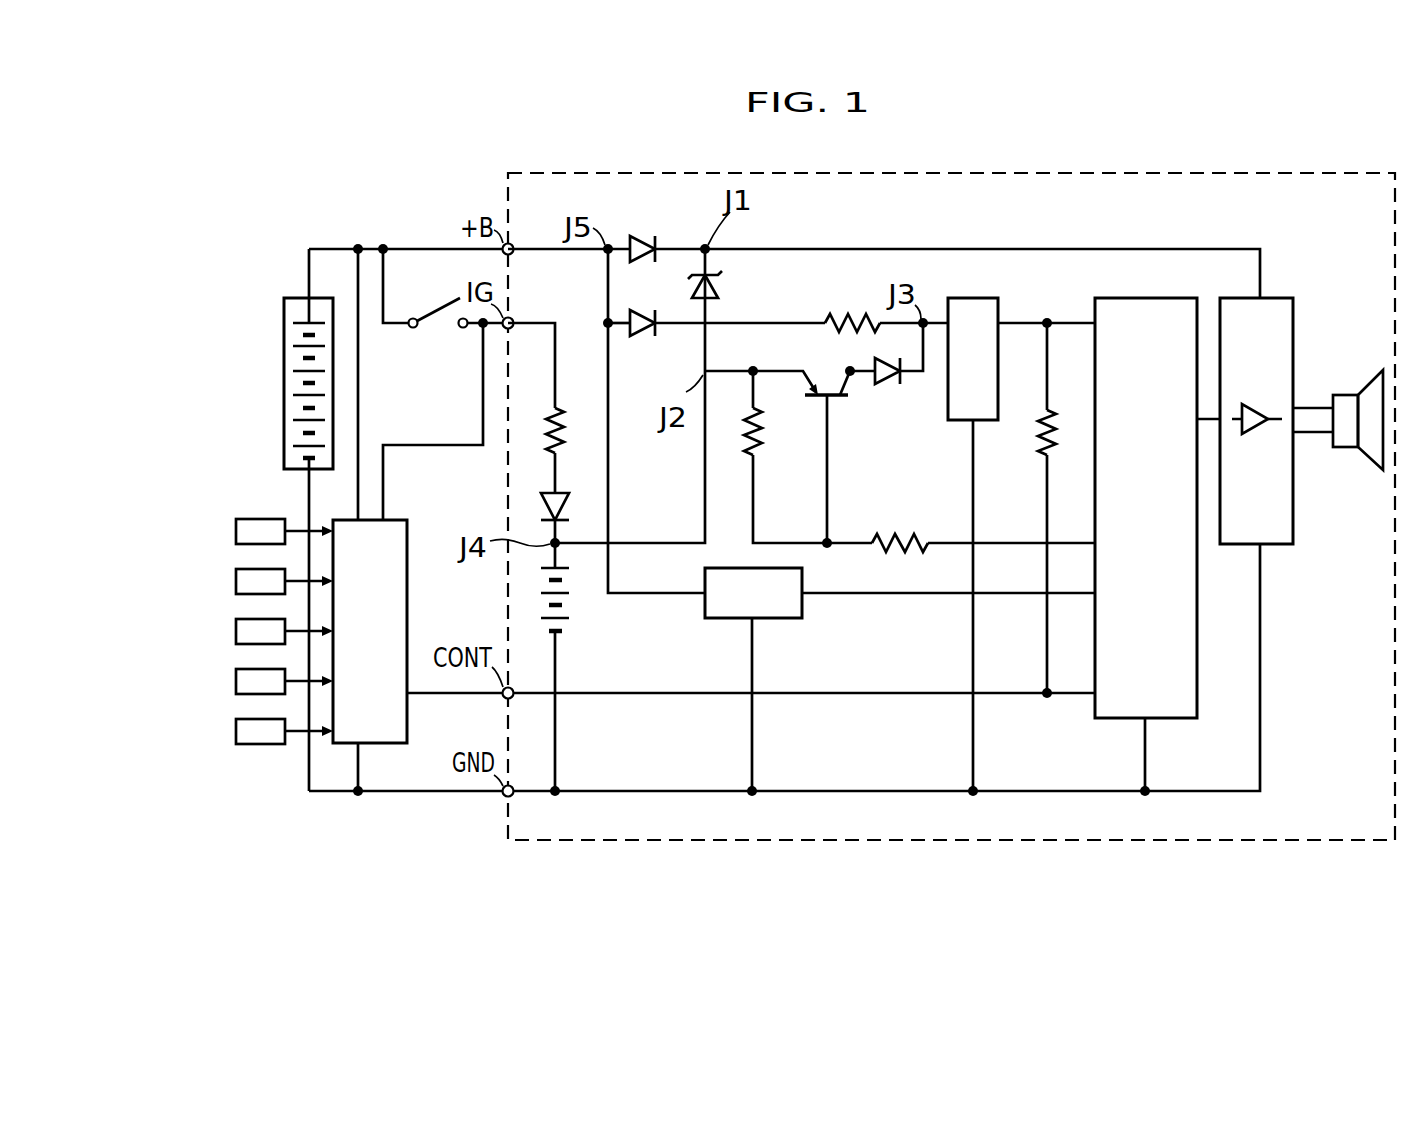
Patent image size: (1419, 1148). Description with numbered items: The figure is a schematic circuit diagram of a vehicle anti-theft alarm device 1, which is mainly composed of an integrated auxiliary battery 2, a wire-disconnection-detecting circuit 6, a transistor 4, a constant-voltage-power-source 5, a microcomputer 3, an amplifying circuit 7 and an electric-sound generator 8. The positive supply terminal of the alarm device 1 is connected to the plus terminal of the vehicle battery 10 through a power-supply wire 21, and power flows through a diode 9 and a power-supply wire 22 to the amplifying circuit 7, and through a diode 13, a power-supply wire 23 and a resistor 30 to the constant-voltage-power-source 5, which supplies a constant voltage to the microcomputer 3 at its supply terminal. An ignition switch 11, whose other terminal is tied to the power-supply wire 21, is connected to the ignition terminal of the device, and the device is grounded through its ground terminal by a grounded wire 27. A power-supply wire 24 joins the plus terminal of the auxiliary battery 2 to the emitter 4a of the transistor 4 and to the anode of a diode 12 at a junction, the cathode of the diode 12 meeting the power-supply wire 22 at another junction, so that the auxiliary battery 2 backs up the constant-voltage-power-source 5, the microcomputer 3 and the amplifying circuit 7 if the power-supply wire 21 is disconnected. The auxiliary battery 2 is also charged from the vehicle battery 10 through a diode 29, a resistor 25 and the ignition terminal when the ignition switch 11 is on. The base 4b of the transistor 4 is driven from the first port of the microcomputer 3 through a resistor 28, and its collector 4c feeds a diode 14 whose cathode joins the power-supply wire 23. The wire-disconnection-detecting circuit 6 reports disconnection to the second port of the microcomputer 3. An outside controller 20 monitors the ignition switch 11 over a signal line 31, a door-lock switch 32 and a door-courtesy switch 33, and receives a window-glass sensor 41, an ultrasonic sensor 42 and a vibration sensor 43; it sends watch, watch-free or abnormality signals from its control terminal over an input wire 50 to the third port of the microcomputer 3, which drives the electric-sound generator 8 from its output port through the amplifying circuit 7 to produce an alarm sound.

The alarm device 1 is at (533, 172).
The auxiliary battery 2 is at (568, 592).
The microcomputer 3 is at (1108, 297).
The transistor 4 is at (780, 438).
The emitter 4a is at (754, 366).
The base 4b is at (822, 539).
The collector 4c is at (850, 366).
The constant-voltage-power-source 5 is at (957, 297).
The wire-disconnection-detecting circuit 6 is at (704, 580).
The amplifying circuit 7 is at (1288, 297).
The electric-sound generator 8 is at (1345, 393).
The diode 9 is at (643, 238).
The vehicle battery 10 is at (290, 298).
The ignition switch 11 is at (433, 313).
The diode 12 is at (717, 289).
The diode 13 is at (643, 337).
The diode 14 is at (892, 387).
The outside controller 20 is at (352, 734).
The power-supply wire 21 is at (433, 248).
The power-supply wire 22 is at (802, 248).
The power-supply wire 23 is at (783, 322).
The power-supply wire 24 is at (647, 542).
The resistor 25 is at (552, 411).
The grounded wire 27 is at (398, 793).
The resistor 28 is at (922, 533).
The diode 29 is at (553, 493).
The resistor 30 is at (863, 318).
The signal line 31 is at (413, 444).
The door-lock switch 32 is at (236, 531).
The door-courtesy switch 33 is at (236, 581).
The window-glass sensor 41 is at (236, 631).
The ultrasonic sensor 42 is at (236, 681).
The vibration sensor 43 is at (236, 731).
The input wire 50 is at (867, 697).